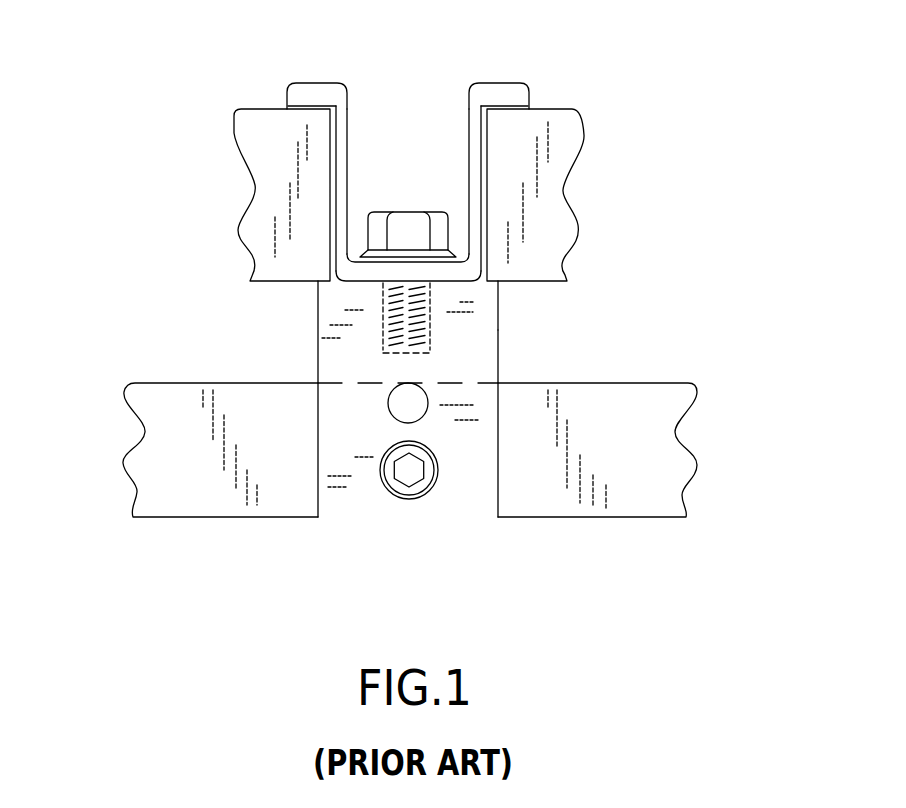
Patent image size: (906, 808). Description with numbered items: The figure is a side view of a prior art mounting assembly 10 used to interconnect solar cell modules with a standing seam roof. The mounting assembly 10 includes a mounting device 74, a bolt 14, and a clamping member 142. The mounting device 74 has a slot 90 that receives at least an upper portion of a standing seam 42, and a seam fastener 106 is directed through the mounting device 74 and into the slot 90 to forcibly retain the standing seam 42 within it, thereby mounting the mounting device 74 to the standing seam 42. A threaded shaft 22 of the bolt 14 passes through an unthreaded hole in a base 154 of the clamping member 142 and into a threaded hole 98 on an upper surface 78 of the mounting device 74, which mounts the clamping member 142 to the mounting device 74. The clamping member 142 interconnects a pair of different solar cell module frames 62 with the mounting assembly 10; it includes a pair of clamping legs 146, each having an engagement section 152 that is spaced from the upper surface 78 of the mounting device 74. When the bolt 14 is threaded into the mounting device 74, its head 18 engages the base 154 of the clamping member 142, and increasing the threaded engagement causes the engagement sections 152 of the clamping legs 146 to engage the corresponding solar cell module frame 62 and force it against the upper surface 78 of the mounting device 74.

The mounting assembly 10 is at (690, 327).
The bolt 14 is at (381, 186).
The head 18 is at (408, 212).
The threaded shaft 22 is at (410, 318).
The standing seam 42 is at (130, 488).
The solar cell module frames 62 is at (238, 232).
The mounting device 74 is at (480, 507).
The upper surface 78 is at (446, 282).
The slot 90 is at (373, 385).
The threaded hole 98 is at (383, 352).
The seam fastener 106 is at (405, 475).
The clamping member 142 is at (481, 88).
The clamping legs 146 is at (348, 125).
The engagement section 152 is at (307, 98).
The base 154 is at (363, 273).